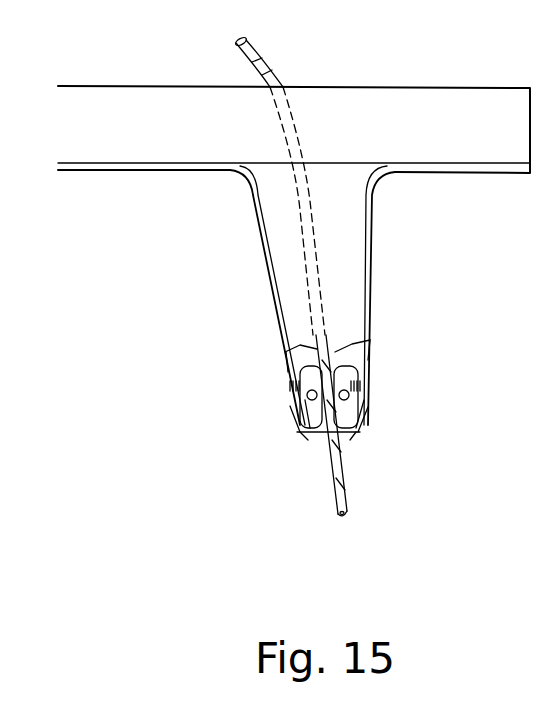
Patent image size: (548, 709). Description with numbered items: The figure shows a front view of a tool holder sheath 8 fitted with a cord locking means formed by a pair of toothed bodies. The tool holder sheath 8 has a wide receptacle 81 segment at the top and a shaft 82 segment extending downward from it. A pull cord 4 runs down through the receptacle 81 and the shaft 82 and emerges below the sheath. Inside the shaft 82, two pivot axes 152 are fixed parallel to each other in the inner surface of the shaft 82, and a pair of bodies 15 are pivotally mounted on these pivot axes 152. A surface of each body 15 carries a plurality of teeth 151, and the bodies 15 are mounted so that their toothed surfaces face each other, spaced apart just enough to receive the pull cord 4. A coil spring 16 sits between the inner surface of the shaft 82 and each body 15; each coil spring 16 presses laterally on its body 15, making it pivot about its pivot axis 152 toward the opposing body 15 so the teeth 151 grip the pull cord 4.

The pull cord 4 is at (350, 498).
The tool holder sheath 8 is at (294, 255).
The receptacle 81 is at (158, 138).
The shaft 82 is at (283, 272).
The body 15 is at (292, 353).
The teeth 151 is at (290, 372).
The pivot axis 152 is at (300, 440).
The coil spring 16 is at (290, 406).